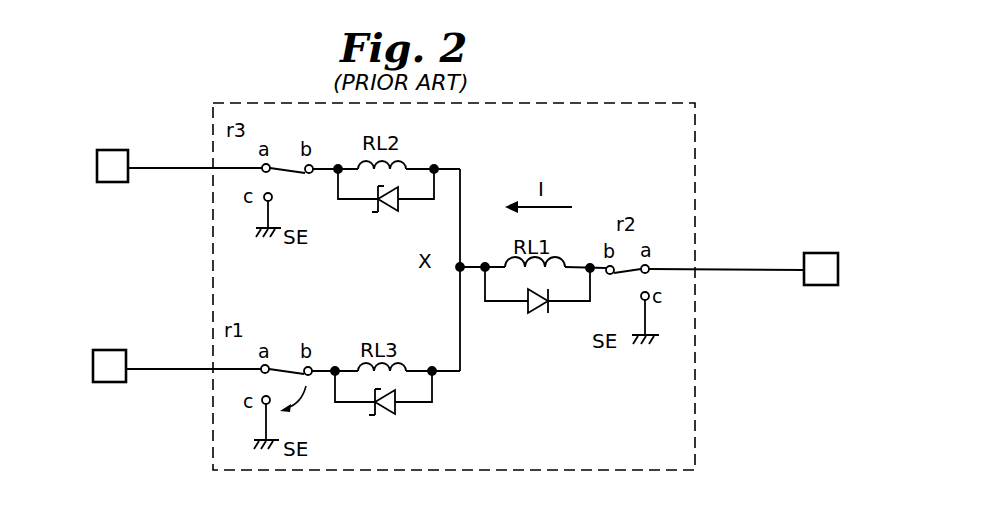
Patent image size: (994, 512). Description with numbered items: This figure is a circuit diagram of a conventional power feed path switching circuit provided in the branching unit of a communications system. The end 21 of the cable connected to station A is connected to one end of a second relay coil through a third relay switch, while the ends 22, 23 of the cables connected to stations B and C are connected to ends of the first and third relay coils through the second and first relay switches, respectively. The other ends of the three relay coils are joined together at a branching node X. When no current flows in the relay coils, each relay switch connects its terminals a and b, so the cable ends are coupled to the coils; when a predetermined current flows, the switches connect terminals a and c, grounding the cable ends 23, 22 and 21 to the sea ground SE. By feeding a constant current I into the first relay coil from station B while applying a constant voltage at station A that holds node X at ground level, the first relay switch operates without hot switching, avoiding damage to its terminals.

The cable end 21 is at (111, 150).
The cable end 22 is at (809, 253).
The cable end 23 is at (101, 350).